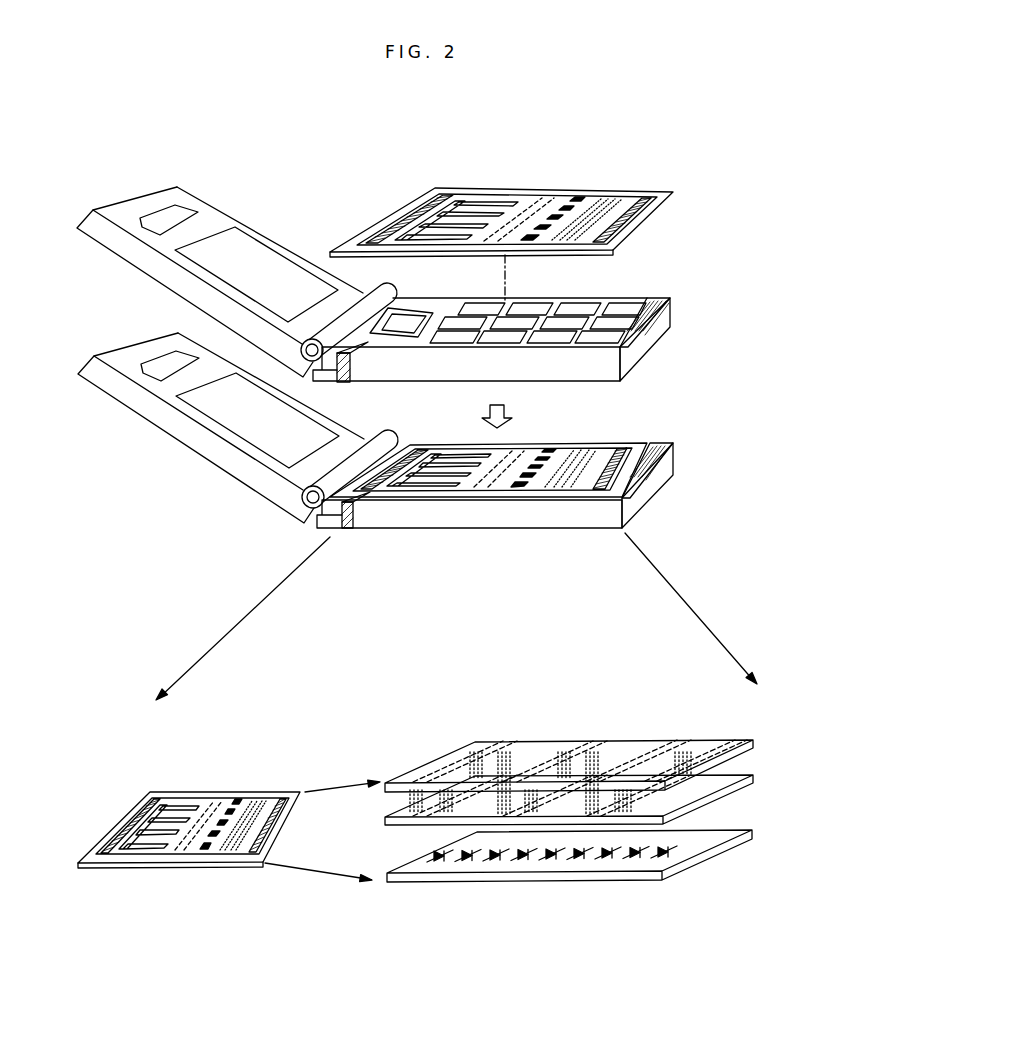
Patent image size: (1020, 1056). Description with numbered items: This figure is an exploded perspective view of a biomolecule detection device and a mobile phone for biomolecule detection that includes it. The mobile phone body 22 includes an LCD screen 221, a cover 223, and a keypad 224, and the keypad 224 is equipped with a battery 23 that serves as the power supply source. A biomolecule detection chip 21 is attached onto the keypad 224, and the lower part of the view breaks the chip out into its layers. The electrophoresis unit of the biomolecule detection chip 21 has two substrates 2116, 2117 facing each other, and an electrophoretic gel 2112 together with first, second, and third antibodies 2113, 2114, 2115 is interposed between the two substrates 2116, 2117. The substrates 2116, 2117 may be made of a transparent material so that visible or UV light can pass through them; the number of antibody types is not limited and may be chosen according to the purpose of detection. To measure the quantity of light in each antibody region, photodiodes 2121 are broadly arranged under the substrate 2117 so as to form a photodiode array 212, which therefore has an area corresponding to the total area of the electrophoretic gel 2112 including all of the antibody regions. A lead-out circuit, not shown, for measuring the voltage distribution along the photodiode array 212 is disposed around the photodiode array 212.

The biomolecule detection chip 21 is at (653, 213).
The mobile phone body 22 is at (165, 186).
The LCD screen 221 is at (258, 255).
The cover 223 is at (125, 256).
The keypad 224 is at (617, 322).
The battery 23 is at (640, 353).
The electrophoretic gel 2112 is at (745, 762).
The first antibody 2113 is at (518, 742).
The second antibody 2114 is at (606, 742).
The third antibody 2115 is at (700, 740).
The substrate 2116 is at (752, 745).
The substrate 2117 is at (752, 778).
The photodiode array 212 is at (752, 838).
The photodiodes 2121 is at (615, 858).